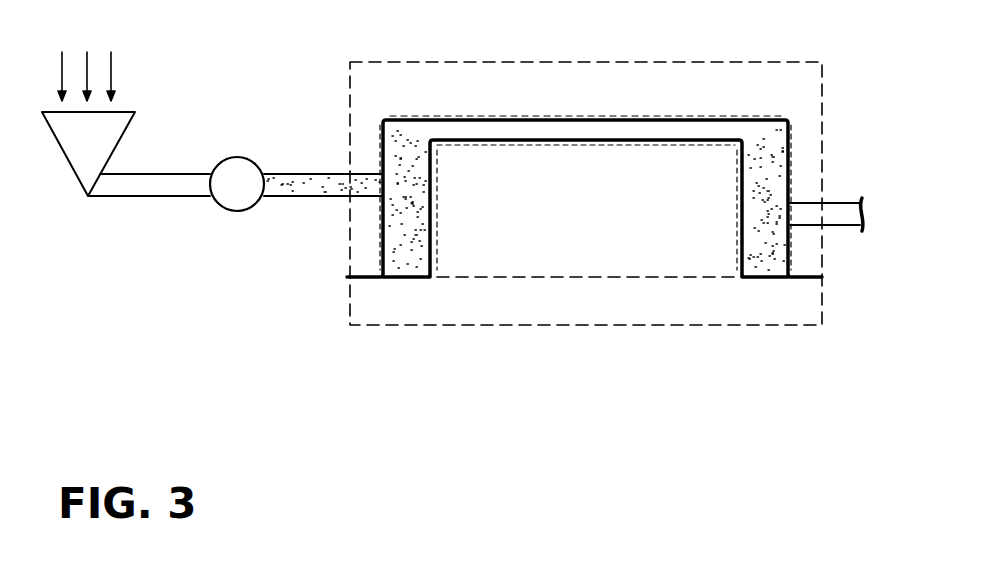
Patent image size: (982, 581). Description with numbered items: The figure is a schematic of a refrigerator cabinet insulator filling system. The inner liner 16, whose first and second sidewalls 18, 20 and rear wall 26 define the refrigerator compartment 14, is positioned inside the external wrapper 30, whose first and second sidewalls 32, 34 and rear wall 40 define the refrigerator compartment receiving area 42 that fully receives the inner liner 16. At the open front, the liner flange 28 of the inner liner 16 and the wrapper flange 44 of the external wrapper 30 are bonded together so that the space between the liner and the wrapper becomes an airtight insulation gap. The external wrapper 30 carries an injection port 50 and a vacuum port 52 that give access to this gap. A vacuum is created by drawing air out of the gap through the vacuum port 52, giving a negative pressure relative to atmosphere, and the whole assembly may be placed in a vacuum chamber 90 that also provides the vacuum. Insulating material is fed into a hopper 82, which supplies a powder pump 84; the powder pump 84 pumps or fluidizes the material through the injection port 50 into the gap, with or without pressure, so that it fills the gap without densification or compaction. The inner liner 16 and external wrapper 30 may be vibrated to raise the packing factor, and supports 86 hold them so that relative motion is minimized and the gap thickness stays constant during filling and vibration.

The refrigerator compartment 14 is at (540, 246).
The inner liner 16 is at (664, 142).
The first sidewall 18 is at (433, 244).
The second sidewall 20 is at (740, 235).
The rear wall 26 is at (558, 141).
The liner flange 28 is at (781, 282).
The external wrapper 30 is at (557, 110).
The first sidewall of external wrapper 32 is at (380, 230).
The second sidewall of external wrapper 34 is at (792, 192).
The rear wall of external wrapper 40 is at (505, 118).
The refrigerator compartment receiving area 42 is at (413, 147).
The wrapper flange 44 is at (815, 275).
The injection port 50 is at (377, 180).
The vacuum port 52 is at (797, 215).
The hopper 82 is at (70, 170).
The powder pump 84 is at (237, 211).
The supports 86 is at (740, 173).
The vacuum chamber 90 is at (457, 60).